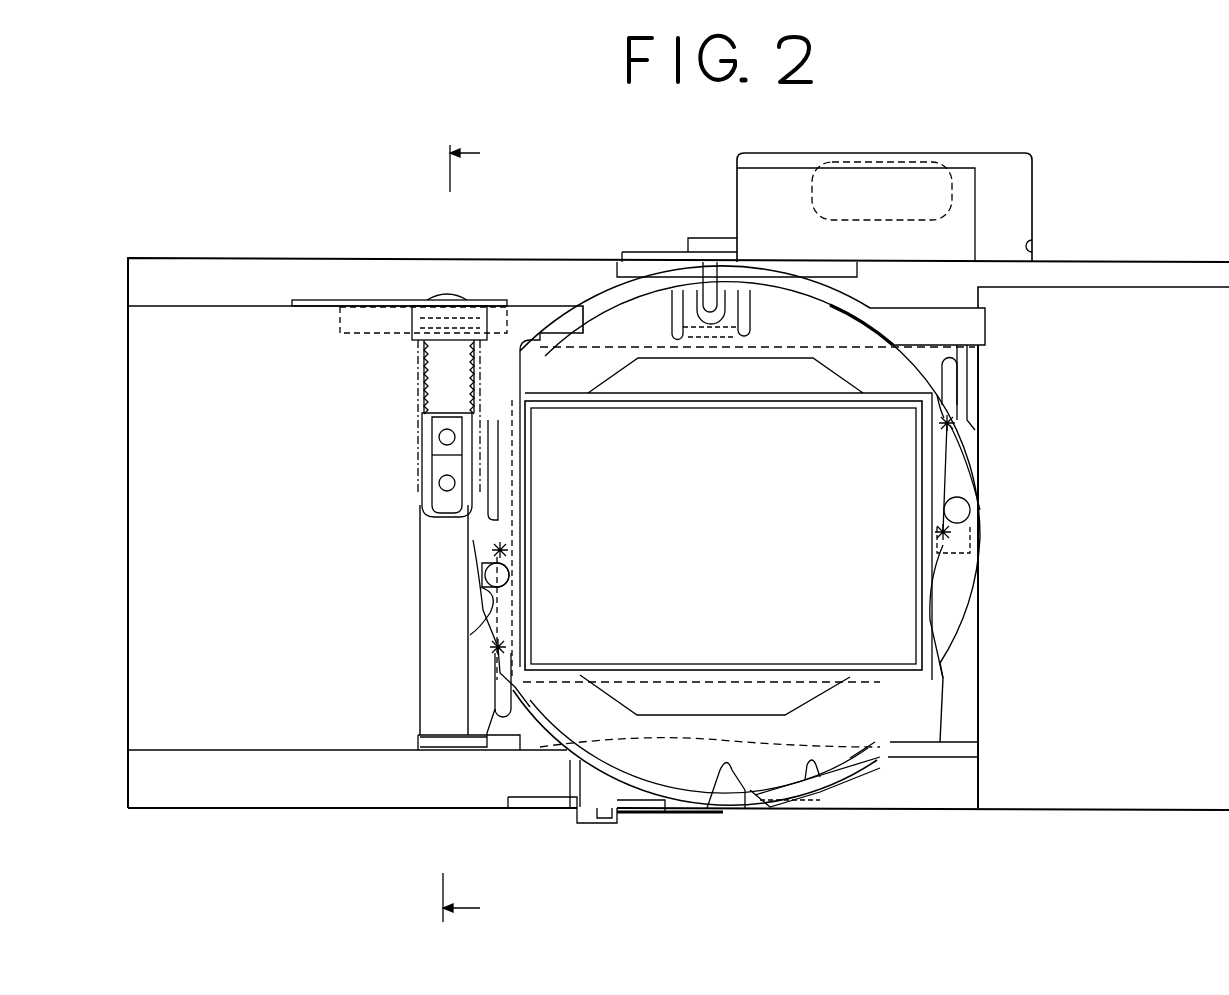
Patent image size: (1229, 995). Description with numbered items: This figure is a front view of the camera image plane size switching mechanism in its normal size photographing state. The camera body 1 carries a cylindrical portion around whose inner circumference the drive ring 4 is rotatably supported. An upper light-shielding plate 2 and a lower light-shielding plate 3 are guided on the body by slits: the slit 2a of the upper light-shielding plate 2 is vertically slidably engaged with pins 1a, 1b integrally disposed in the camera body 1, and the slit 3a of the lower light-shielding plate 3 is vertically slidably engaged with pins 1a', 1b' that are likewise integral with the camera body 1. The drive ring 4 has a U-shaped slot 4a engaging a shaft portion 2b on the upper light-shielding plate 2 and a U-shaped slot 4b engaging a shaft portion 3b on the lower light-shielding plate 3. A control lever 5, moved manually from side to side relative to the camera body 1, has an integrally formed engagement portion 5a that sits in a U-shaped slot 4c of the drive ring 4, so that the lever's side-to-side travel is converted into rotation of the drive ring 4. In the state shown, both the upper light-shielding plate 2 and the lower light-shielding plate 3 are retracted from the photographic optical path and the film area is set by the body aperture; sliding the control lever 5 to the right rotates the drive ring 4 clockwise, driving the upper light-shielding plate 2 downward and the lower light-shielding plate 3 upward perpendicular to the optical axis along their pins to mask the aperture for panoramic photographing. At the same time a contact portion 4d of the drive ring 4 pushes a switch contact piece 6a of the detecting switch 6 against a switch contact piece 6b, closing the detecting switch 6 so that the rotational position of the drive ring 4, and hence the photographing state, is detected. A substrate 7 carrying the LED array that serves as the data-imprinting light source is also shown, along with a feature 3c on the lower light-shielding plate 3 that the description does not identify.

The camera body 1 is at (250, 327).
The pin 1a is at (399, 672).
The pin 1a' is at (1012, 568).
The pin 1b is at (400, 533).
The pin 1b' is at (1015, 414).
The upper light-shielding plate 2 is at (543, 357).
The slit 2a is at (973, 370).
The shaft portion 2b is at (970, 510).
The lower light-shielding plate 3 is at (540, 745).
The slit 3a is at (533, 723).
The shaft portion 3b is at (483, 573).
The gear box of rotating frame 3c is at (440, 510).
The drive ring 4 is at (474, 532).
The U-shaped slot 4a is at (947, 497).
The U-shaped slot 4b is at (483, 608).
The U-shaped slot 4c is at (682, 302).
The contact portion 4d is at (750, 790).
The control lever 5 is at (1022, 197).
The engagement portion 5a is at (710, 287).
The detecting switch 6 is at (623, 820).
The switch contact piece 6a is at (777, 773).
The switch contact piece 6b is at (707, 817).
The substrate 7 is at (322, 300).